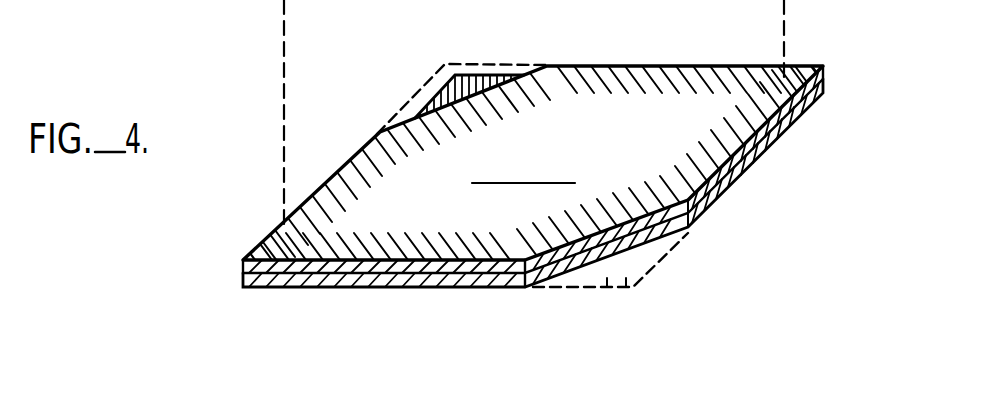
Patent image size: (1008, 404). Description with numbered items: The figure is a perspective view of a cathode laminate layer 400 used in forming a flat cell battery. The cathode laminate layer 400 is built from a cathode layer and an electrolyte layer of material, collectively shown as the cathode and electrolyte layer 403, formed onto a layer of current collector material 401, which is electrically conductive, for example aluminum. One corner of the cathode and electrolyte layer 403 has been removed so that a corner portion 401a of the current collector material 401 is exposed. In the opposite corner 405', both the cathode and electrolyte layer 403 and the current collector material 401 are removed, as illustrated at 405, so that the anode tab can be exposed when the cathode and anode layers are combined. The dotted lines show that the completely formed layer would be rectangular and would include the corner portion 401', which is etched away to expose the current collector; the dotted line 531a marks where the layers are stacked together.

The cathode laminate layer 400 is at (242, 213).
The current collector material layer 401 is at (533, 213).
The corner portion of the cathode-electrolyte layer 401' is at (432, 95).
The exposed corner portion of the current collector material 401a is at (472, 87).
The cathode and electrolyte layer 403 is at (690, 140).
The removed corner region 405 is at (533, 167).
The opposite corner 405' is at (610, 293).
The dotted line 531a is at (283, 39).